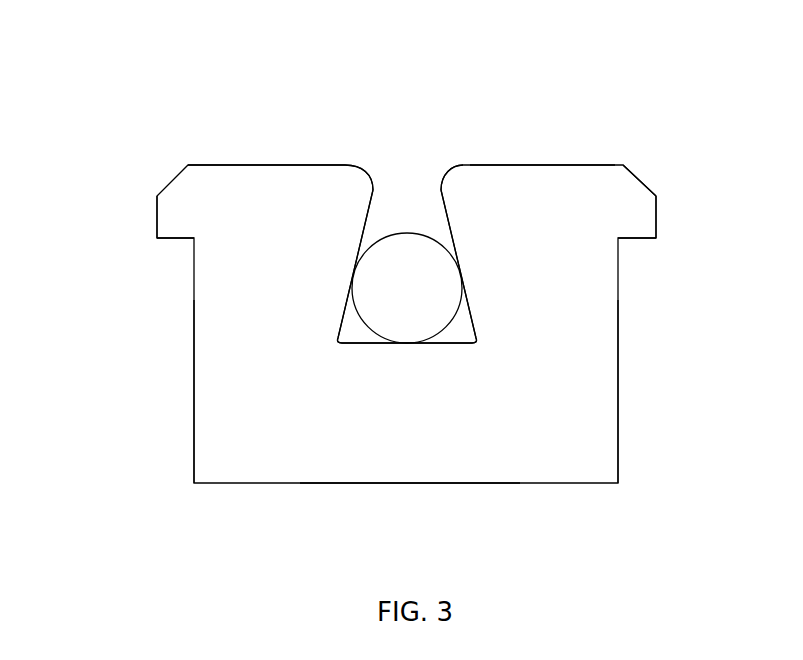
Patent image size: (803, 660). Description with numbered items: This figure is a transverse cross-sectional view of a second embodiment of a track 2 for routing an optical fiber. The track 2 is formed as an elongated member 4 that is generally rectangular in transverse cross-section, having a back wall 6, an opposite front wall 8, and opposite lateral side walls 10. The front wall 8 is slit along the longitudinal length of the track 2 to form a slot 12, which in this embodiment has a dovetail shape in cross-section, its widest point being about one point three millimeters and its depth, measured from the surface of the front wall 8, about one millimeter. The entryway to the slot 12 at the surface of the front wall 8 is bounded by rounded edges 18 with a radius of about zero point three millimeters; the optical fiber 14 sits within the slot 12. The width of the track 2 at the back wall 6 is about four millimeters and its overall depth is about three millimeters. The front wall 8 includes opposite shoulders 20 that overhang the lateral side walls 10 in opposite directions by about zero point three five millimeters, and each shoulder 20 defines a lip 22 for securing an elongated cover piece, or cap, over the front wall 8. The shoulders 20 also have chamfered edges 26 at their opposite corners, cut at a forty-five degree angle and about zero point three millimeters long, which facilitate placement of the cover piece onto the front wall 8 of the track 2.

The track 2 is at (118, 83).
The elongated member 4 is at (235, 483).
The back wall 6 is at (473, 483).
The front wall 8 is at (523, 165).
The lateral side walls 10 is at (194, 411).
The slot 12 is at (395, 168).
The cable 14 is at (440, 228).
The rounded edges 18 is at (370, 178).
The shoulders 20 is at (157, 218).
The lip 22 is at (175, 240).
The chamfered edges 26 is at (640, 178).